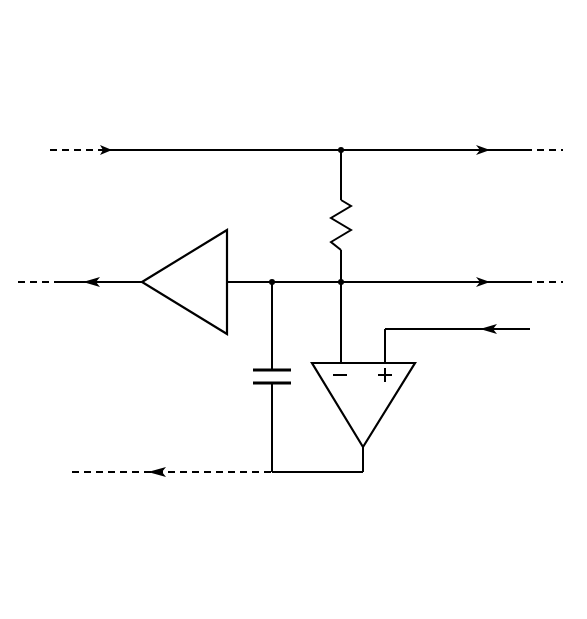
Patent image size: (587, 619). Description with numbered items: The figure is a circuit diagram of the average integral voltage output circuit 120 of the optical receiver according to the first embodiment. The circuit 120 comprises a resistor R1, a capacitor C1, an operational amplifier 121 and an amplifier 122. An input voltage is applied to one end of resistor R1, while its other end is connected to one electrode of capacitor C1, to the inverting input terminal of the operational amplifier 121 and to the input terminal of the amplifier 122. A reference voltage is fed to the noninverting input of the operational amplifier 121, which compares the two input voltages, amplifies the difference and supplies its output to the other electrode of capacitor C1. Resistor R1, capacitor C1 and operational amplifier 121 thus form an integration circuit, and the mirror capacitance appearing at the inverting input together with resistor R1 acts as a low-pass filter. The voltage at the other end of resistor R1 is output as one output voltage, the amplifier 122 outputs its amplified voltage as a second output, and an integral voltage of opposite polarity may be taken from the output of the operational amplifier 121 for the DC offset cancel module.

The average integral voltage output circuit 120 is at (42, 100).
The operational amplifier 121 is at (396, 390).
The amplifier 122 is at (176, 305).
The resistor R1 is at (324, 225).
The capacitor C1 is at (263, 377).